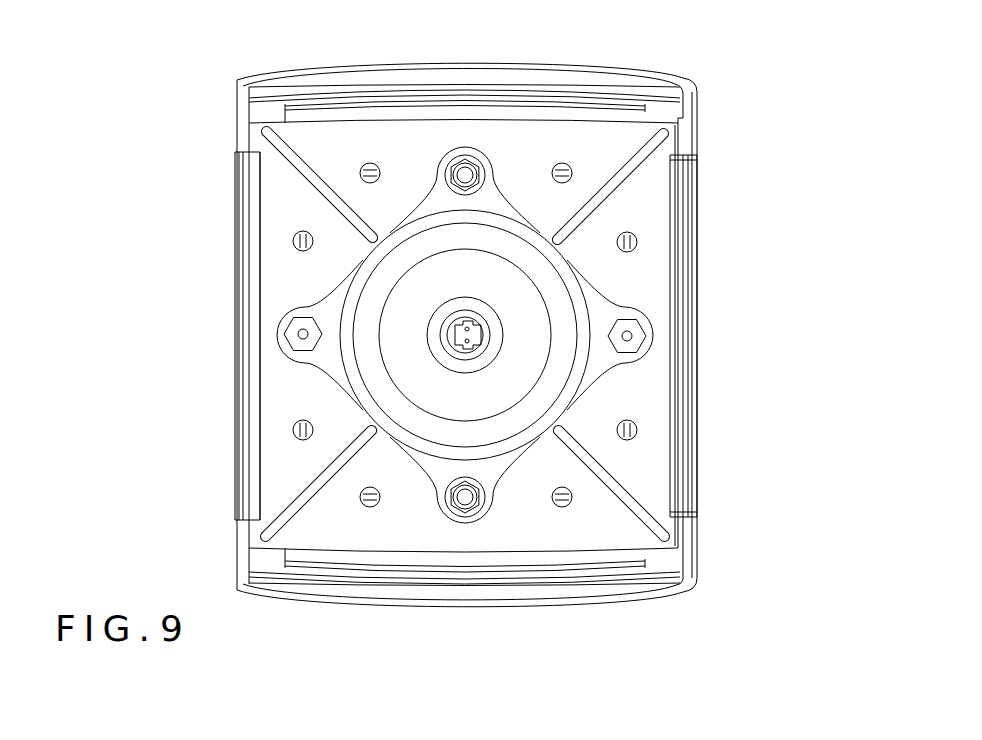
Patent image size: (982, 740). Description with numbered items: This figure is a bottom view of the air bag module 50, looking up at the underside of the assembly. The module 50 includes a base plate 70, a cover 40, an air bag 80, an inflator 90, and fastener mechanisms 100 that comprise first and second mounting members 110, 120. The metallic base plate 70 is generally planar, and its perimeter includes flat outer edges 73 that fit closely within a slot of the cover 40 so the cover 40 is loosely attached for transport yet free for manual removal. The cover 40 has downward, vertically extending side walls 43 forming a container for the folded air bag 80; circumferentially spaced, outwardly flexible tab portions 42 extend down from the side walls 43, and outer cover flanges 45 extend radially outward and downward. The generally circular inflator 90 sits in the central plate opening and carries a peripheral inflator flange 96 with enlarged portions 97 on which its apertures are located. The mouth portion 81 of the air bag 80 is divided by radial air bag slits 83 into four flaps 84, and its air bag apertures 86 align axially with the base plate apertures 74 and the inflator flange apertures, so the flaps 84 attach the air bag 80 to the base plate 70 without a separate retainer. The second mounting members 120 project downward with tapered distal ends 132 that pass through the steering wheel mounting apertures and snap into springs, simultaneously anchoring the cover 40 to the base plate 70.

The cover 40 is at (688, 82).
The tab portions 42 is at (403, 103).
The side walls 43 is at (593, 103).
The outer cover flanges 45 is at (432, 70).
The air bag module 50 is at (698, 118).
The base plate 70 is at (637, 170).
The flat outer edges 73 is at (673, 148).
The base plate apertures 74 is at (726, 263).
The air bag 80 is at (640, 402).
The mouth portion 81 is at (660, 452).
The air bag slits 83 is at (290, 157).
The flaps 84 is at (358, 143).
The air bag apertures 86 is at (632, 246).
The inflator 90 is at (382, 366).
The inflator flange 96 is at (357, 255).
The enlarged portions 97 is at (317, 312).
The fastener mechanisms 100 is at (199, 325).
The first mounting members 110 is at (470, 176).
The second mounting members 120 is at (561, 97).
The tapered distal ends 132 is at (303, 335).